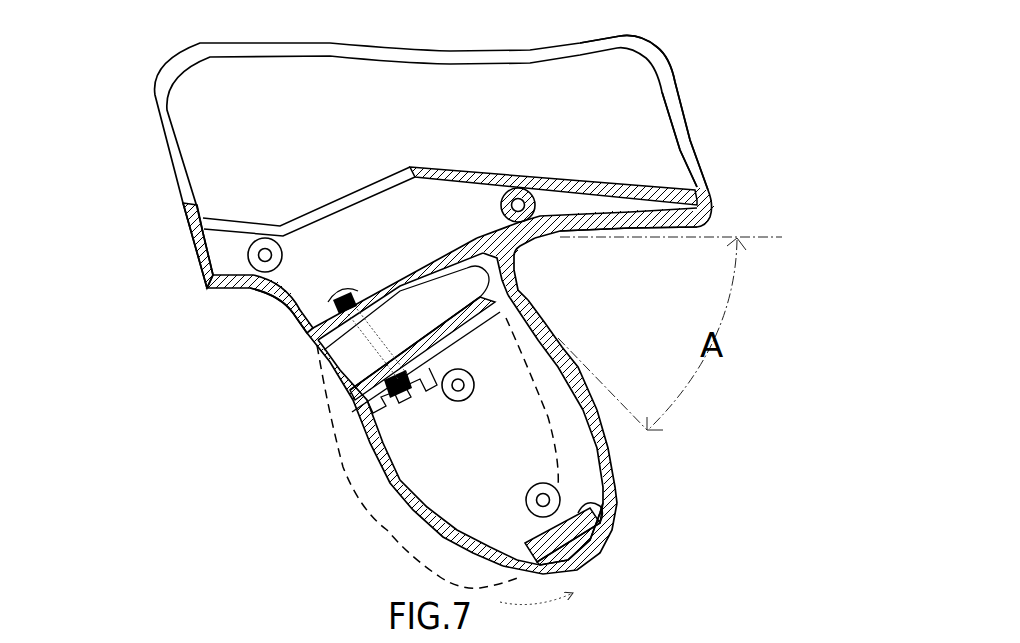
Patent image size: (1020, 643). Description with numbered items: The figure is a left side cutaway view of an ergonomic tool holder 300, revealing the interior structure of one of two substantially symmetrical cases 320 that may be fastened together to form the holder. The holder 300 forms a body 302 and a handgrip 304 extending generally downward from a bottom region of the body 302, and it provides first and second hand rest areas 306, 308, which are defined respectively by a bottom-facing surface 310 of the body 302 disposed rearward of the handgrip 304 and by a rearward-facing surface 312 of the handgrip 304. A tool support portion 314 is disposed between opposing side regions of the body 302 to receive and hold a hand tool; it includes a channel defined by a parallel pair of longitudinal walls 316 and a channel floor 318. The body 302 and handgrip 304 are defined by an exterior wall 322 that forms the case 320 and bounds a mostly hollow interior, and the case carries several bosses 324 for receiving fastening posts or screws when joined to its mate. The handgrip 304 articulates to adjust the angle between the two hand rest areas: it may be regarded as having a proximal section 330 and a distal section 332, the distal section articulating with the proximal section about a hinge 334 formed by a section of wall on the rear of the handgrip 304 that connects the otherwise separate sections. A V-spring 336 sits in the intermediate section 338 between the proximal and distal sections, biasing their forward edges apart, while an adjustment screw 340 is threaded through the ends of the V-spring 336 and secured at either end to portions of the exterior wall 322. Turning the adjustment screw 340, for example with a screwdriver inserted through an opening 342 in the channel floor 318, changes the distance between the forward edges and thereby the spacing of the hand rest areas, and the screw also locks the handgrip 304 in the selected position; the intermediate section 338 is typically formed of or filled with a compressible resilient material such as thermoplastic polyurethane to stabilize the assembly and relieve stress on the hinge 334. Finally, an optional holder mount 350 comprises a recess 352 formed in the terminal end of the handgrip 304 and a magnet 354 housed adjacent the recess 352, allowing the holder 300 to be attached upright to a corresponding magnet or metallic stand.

The ergonomic tool holder 300 is at (406, 306).
The body 302 is at (406, 148).
The handgrip 304 is at (626, 500).
The first hand rest area 306 is at (612, 230).
The second hand rest area 308 is at (547, 325).
The bottom-facing surface 310 is at (610, 240).
The rearward-facing surface 312 is at (588, 383).
The tool support portion 314 is at (668, 42).
The longitudinal walls 316 is at (672, 68).
The channel floor 318 is at (484, 172).
The case 320 is at (180, 260).
The exterior wall 322 is at (244, 289).
The bosses 324 is at (283, 256).
The proximal section 330 is at (288, 318).
The distal section 332 is at (397, 553).
The hinge 334 is at (516, 272).
The V-spring 336 is at (405, 348).
The intermediate section 338 is at (318, 370).
The adjustment screw 340 is at (352, 291).
The opening 342 is at (330, 205).
The holder mount 350 is at (614, 553).
The recess 352 is at (598, 548).
The magnet 354 is at (601, 512).